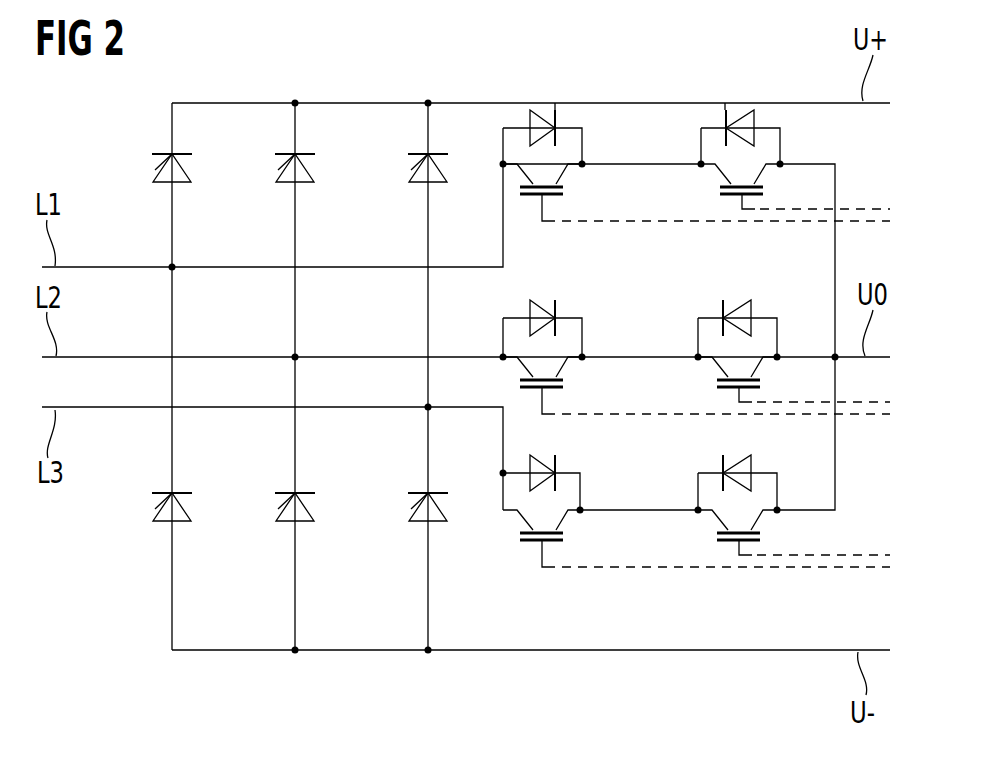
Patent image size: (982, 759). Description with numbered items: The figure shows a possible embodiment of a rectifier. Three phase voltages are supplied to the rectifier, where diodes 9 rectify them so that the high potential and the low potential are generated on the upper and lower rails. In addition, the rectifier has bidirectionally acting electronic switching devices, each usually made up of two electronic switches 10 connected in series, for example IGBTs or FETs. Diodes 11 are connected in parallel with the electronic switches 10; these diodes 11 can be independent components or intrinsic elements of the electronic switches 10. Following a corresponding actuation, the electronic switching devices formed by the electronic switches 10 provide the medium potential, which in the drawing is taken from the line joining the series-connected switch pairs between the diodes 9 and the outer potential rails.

The diodes 9 is at (411, 509).
The electronic switches 10 is at (734, 545).
The diodes 11 is at (756, 470).